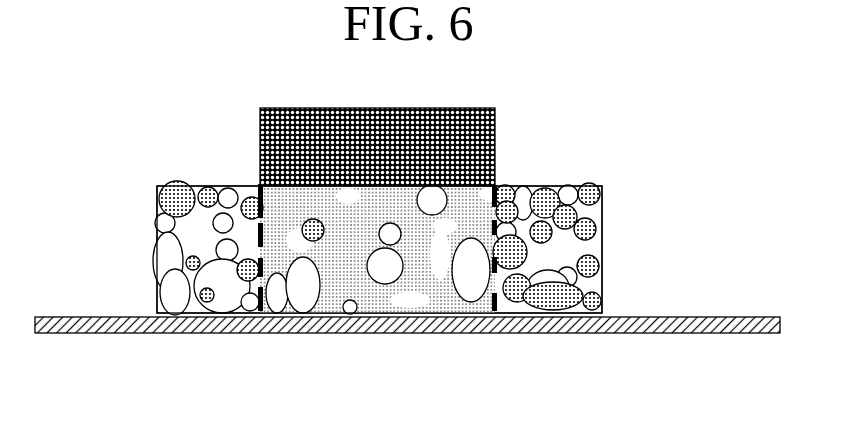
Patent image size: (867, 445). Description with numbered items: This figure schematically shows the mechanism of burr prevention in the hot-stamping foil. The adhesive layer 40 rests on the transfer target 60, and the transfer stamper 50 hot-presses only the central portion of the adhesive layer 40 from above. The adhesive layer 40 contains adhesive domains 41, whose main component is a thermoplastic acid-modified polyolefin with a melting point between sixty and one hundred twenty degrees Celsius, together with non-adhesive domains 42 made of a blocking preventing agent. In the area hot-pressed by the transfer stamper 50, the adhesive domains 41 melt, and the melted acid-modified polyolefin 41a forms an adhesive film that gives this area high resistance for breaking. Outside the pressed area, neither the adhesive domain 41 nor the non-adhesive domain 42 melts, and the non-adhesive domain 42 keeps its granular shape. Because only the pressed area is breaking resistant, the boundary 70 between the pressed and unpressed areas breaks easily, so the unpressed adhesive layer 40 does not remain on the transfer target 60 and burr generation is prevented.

The adhesive layer 40 is at (379, 254).
The adhesive domain 41 is at (168, 202).
The melted acid-modified polyolefin 41a is at (412, 207).
The non-adhesive domain 42 is at (163, 293).
The transfer stamper 50 is at (260, 135).
The transfer target 60 is at (88, 323).
The boundary 70 is at (500, 299).